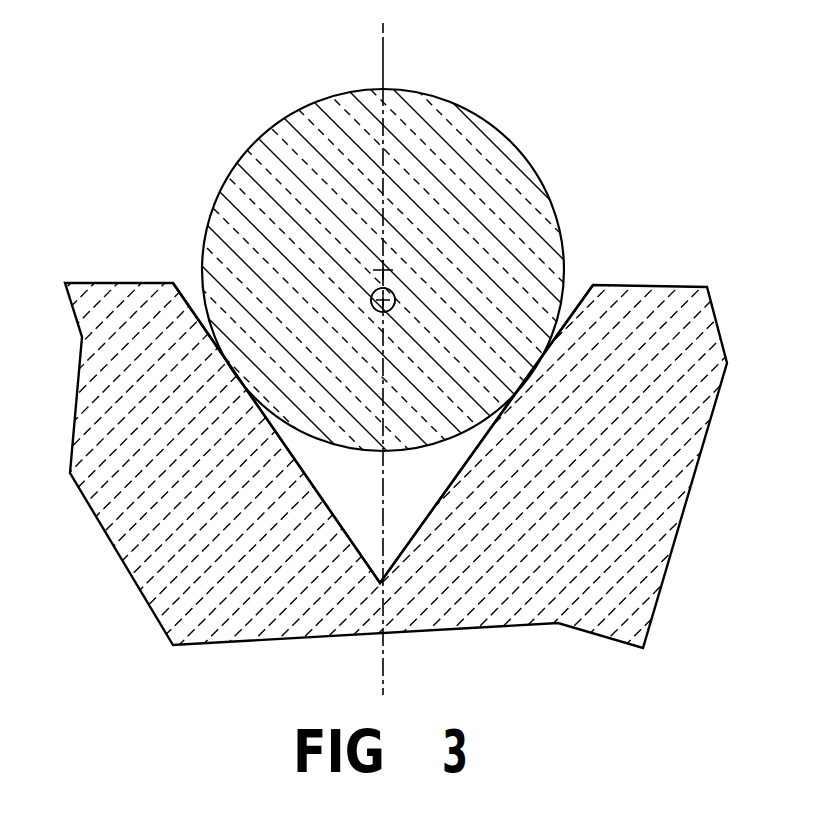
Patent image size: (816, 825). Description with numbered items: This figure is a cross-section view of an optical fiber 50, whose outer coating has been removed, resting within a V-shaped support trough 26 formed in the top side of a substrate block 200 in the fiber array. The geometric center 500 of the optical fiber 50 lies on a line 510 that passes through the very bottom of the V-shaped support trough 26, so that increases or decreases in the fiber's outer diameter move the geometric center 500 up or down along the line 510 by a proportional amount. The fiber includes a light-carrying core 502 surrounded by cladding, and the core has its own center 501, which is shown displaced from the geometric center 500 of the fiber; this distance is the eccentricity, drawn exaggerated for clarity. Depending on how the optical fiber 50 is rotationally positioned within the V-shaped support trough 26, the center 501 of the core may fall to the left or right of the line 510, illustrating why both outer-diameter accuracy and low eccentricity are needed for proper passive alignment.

The V-shaped support trough 26 is at (584, 287).
The optical fiber 50 is at (270, 143).
The substrate block 200 is at (148, 287).
The geometric center 500 is at (375, 266).
The center 501 is at (372, 296).
The light-carrying core 502 is at (393, 292).
The line 510 is at (384, 65).